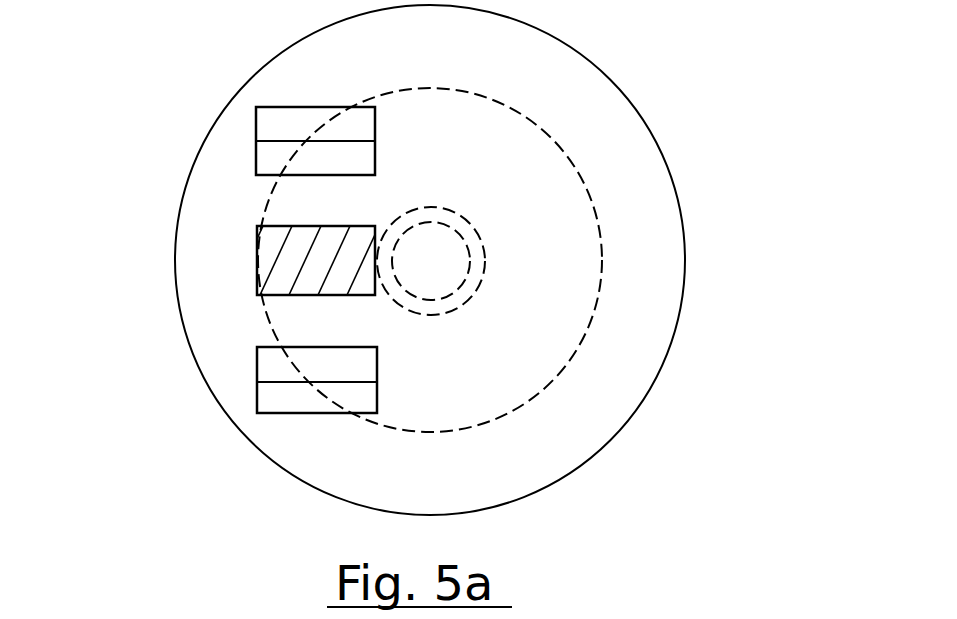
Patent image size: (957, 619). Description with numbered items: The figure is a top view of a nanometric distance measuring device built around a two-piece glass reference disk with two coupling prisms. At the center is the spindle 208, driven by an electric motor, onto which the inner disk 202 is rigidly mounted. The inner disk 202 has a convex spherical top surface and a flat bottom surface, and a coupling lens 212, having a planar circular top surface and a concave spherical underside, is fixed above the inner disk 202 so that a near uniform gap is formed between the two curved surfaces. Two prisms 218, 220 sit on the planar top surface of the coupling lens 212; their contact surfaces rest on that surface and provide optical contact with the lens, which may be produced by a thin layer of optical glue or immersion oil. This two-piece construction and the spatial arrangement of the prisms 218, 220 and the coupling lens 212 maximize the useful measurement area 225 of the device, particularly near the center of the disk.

The coupling lens 212 is at (585, 93).
The inner disk 202 is at (587, 190).
The spindle 208 is at (473, 295).
The prism 220 is at (238, 129).
The prism 218 is at (234, 388).
The useful measurement area 225 is at (288, 267).